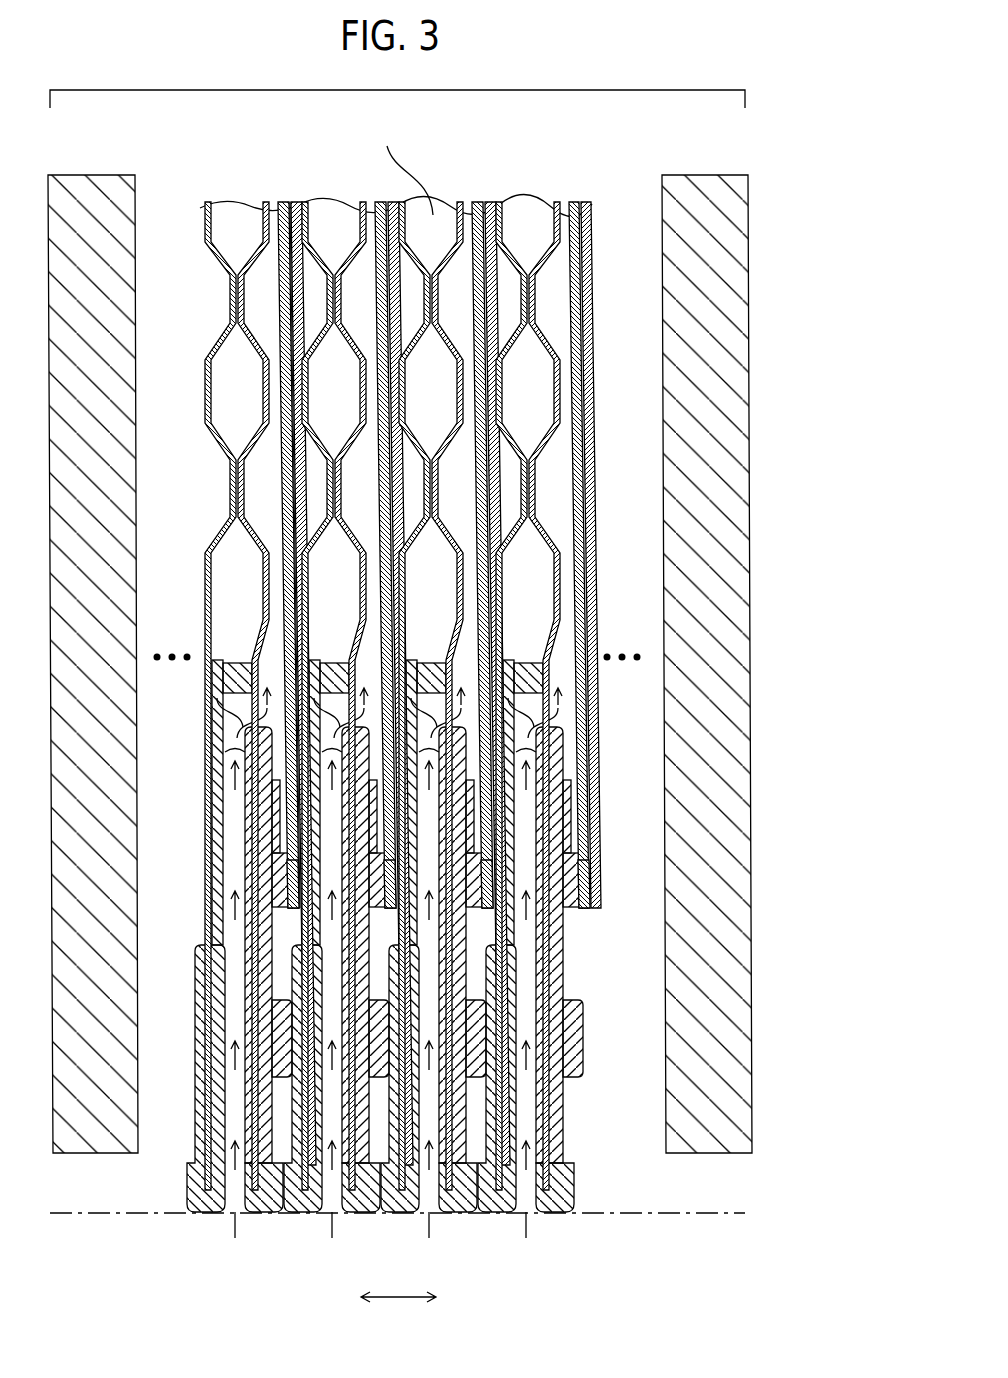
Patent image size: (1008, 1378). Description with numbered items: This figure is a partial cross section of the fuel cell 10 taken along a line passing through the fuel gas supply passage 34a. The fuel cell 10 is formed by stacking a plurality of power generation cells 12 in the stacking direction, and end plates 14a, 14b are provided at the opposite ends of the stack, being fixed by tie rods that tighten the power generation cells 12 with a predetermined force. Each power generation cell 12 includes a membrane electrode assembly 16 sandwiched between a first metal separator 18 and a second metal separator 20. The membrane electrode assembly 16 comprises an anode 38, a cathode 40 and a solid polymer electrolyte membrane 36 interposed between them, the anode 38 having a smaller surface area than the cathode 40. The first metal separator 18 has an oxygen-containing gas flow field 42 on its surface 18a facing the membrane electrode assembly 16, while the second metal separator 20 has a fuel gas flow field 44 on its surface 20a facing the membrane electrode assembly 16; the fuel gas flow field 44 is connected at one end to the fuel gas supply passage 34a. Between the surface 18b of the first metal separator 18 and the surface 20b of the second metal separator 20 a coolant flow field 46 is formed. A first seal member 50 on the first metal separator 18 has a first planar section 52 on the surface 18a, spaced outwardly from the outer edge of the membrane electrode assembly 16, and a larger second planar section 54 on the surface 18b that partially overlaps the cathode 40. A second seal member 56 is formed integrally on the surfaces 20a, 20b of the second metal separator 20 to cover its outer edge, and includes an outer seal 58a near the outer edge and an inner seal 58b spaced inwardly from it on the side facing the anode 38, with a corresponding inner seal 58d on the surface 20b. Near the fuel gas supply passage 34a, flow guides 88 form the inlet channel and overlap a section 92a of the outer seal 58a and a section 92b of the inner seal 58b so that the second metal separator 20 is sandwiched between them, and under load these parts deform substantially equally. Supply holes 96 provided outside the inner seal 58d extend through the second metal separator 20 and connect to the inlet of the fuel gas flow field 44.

The fuel cell 10 is at (147, 133).
The power generation cell 12 is at (473, 184).
The end plate 14a is at (90, 1152).
The end plate 14b is at (703, 1152).
The membrane electrode assembly 16 is at (287, 637).
The first metal separator 18 is at (376, 696).
The surface of the first metal separator 18a is at (306, 408).
The surface of the first metal separator 18b is at (309, 383).
The second metal separator 20 is at (229, 678).
The surface of the second metal separator 20a is at (268, 408).
The surface of the second metal separator 20b is at (264, 383).
The fuel gas supply passage 34a is at (595, 1218).
The solid polymer electrolyte membrane 36 is at (285, 526).
The anode 38 is at (279, 200).
The cathode 40 is at (298, 200).
The oxygen-containing gas flow field 42 is at (315, 313).
The fuel gas flow field 44 is at (255, 313).
The coolant flow field 46 is at (528, 696).
The first seal member 50 is at (194, 1091).
The first planar section 52 is at (392, 947).
The second planar section 54 is at (303, 923).
The second seal member 56 is at (595, 1084).
The outer seal 58a is at (399, 1038).
The inner seal 58b is at (403, 819).
The inner seal 58d is at (232, 667).
The flow guides 88 is at (236, 928).
The section of the outer seal 92a is at (610, 1038).
The section of the inner seal 92b is at (610, 819).
The supply holes 96 is at (208, 704).